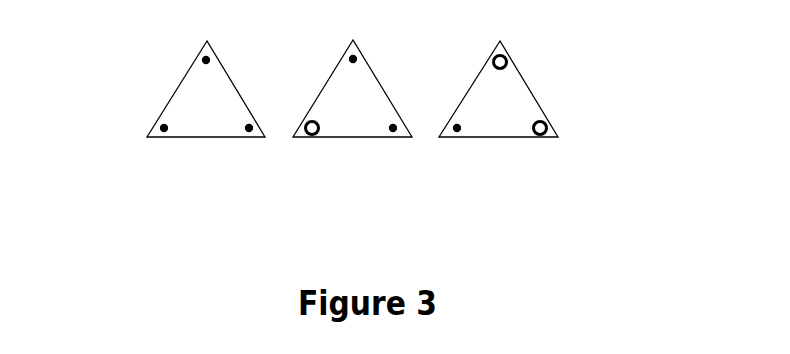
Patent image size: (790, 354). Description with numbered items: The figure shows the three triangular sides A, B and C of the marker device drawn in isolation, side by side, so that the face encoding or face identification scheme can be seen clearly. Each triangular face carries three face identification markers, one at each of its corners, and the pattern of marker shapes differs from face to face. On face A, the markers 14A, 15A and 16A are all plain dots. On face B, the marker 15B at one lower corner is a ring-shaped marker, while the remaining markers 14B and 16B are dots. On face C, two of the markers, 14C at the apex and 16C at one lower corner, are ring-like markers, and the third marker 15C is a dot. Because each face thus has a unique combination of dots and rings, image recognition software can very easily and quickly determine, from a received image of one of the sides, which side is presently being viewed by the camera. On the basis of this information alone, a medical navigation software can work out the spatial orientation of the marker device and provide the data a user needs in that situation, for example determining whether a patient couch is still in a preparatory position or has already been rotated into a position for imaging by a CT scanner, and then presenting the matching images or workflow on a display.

The face identification marker 14A is at (189, 51).
The face identification marker 15A is at (157, 146).
The face identification marker 16A is at (251, 147).
The face identification marker 14B is at (342, 49).
The ring-shaped marker 15B is at (310, 147).
The face identification marker 16B is at (400, 146).
The ring-like marker 14C is at (516, 50).
The face identification marker 15C is at (466, 146).
The ring-like marker 16C is at (558, 128).